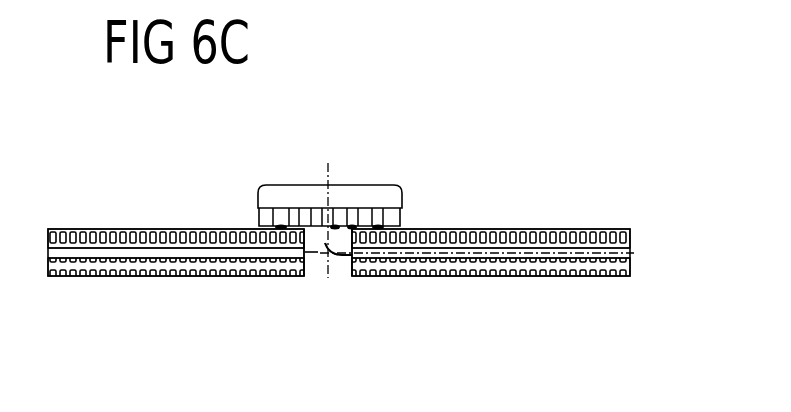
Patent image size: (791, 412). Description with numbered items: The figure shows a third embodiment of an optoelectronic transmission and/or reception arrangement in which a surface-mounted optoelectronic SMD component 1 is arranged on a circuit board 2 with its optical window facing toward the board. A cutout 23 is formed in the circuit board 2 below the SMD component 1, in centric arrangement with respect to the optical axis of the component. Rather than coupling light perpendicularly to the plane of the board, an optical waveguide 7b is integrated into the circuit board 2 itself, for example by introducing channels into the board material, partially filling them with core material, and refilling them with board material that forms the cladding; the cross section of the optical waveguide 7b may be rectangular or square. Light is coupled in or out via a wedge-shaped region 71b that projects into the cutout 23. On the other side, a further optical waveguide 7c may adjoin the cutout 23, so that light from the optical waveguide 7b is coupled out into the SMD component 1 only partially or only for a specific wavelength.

The SMD component 1 is at (353, 194).
The circuit board 2 is at (341, 259).
The optical waveguide 7b is at (518, 250).
The further optical waveguide 7c is at (188, 250).
The wedge-shaped region 71b is at (328, 254).
The cutout 23 is at (337, 260).